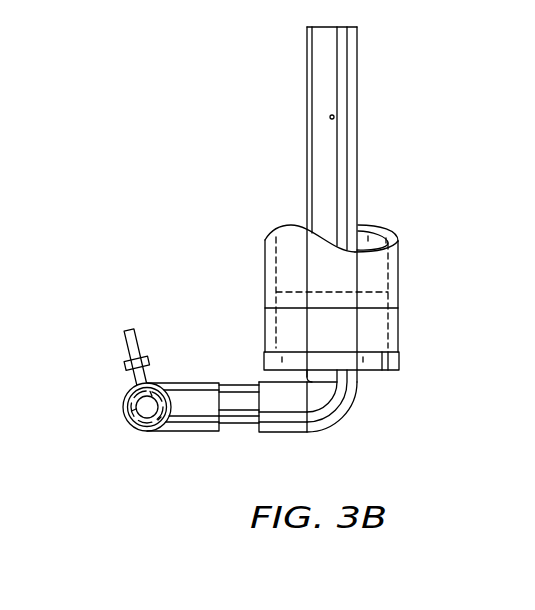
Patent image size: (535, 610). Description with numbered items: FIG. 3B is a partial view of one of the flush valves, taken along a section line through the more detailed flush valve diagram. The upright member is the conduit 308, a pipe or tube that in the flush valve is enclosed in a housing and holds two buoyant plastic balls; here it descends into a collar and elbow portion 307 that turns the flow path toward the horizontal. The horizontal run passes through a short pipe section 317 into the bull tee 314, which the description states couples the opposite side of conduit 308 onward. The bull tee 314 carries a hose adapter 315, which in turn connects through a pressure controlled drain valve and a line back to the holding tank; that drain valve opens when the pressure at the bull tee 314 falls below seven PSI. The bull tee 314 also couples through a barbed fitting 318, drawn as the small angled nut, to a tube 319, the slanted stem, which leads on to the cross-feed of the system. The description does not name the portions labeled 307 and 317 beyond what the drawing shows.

The elbow body with collar 307 is at (355, 393).
The conduit 308 is at (357, 138).
The bull tee 314 is at (122, 403).
The hose adapter 315 is at (132, 423).
The pipe section 317 is at (240, 425).
The barbed fitting 318 is at (148, 366).
The tube 319 is at (127, 347).